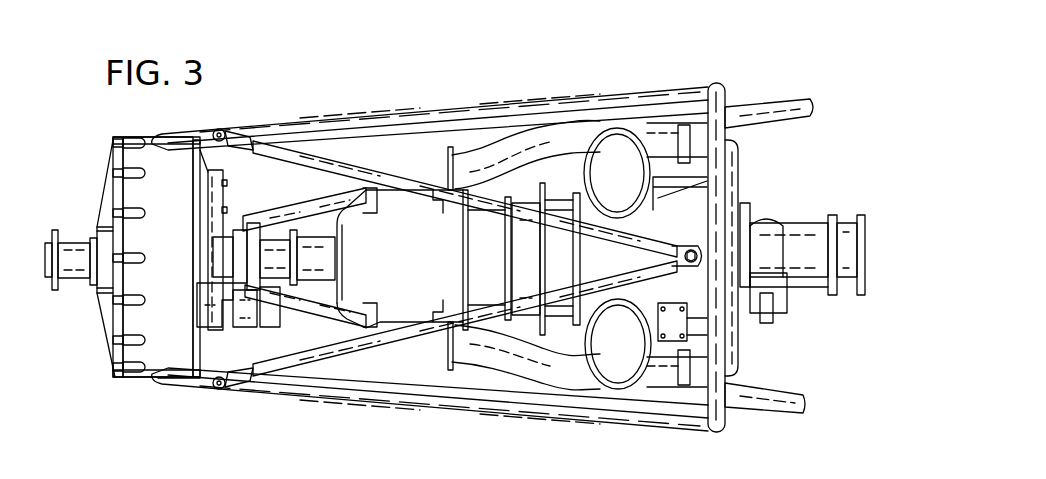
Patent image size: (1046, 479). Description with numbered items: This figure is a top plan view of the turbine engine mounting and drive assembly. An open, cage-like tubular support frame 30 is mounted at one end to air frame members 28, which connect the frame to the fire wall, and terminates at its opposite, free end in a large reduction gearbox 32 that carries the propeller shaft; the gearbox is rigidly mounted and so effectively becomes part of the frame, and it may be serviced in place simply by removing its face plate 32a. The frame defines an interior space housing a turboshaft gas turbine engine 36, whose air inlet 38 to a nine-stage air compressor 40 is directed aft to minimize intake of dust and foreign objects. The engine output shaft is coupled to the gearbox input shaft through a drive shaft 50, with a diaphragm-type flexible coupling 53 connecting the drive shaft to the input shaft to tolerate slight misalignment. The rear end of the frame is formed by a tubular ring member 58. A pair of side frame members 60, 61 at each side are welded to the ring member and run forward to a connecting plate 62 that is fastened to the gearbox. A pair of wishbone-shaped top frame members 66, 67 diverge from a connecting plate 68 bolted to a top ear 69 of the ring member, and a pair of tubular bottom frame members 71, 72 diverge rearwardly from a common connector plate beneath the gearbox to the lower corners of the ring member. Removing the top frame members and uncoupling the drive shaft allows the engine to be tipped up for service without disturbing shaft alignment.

The air frame members 28 is at (777, 102).
The support frame 30 is at (350, 161).
The gearbox 32 is at (160, 155).
The face plate 32a is at (112, 190).
The turboshaft gas turbine engine 36 is at (448, 263).
The air inlet 38 is at (870, 227).
The air compressor 40 is at (800, 232).
The drive shaft 50 is at (310, 243).
The second flexible coupling 53 is at (270, 223).
The tubular ring member 58 is at (716, 327).
The side frame member 60 is at (393, 116).
The side frame member 61 is at (473, 130).
The connecting plate 62 is at (185, 390).
The top frame member 66 is at (330, 163).
The top frame member 67 is at (410, 328).
The connecting plate 68 is at (682, 250).
The top ear 69 is at (698, 245).
The bottom frame member 71 is at (333, 197).
The bottom frame member 72 is at (330, 318).